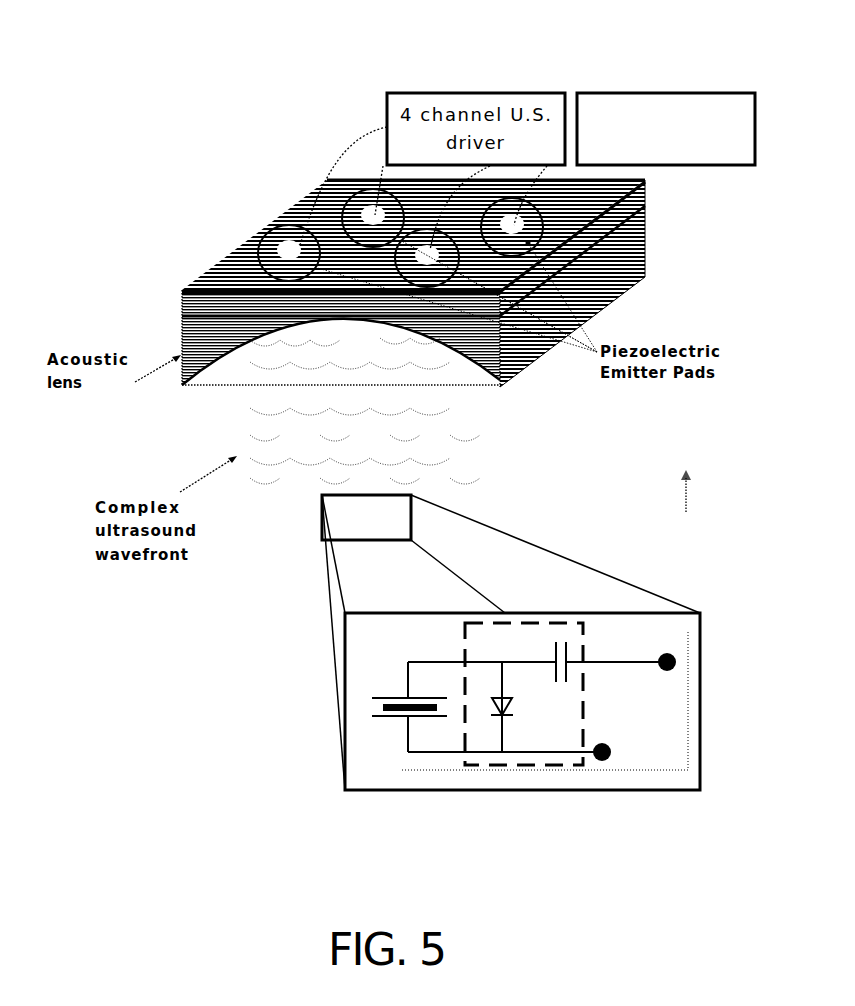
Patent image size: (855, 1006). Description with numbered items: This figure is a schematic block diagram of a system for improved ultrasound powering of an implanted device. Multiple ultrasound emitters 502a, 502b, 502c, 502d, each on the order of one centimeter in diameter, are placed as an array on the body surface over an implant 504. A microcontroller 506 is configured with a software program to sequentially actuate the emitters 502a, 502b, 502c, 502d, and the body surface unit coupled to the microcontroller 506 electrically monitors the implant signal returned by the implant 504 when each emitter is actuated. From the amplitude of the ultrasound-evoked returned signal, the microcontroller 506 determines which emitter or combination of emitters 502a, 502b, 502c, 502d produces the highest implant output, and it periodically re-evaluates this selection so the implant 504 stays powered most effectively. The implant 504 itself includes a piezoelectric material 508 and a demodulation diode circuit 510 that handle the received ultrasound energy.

The ultrasound emitter 502a is at (272, 242).
The ultrasound emitter 502b is at (358, 208).
The ultrasound emitter 502c is at (530, 218).
The ultrasound emitter 502d is at (423, 272).
The implant 504 is at (388, 493).
The microcontroller 506 is at (675, 92).
The piezoelectric material 508 is at (388, 722).
The demodulation diode circuit 510 is at (512, 770).